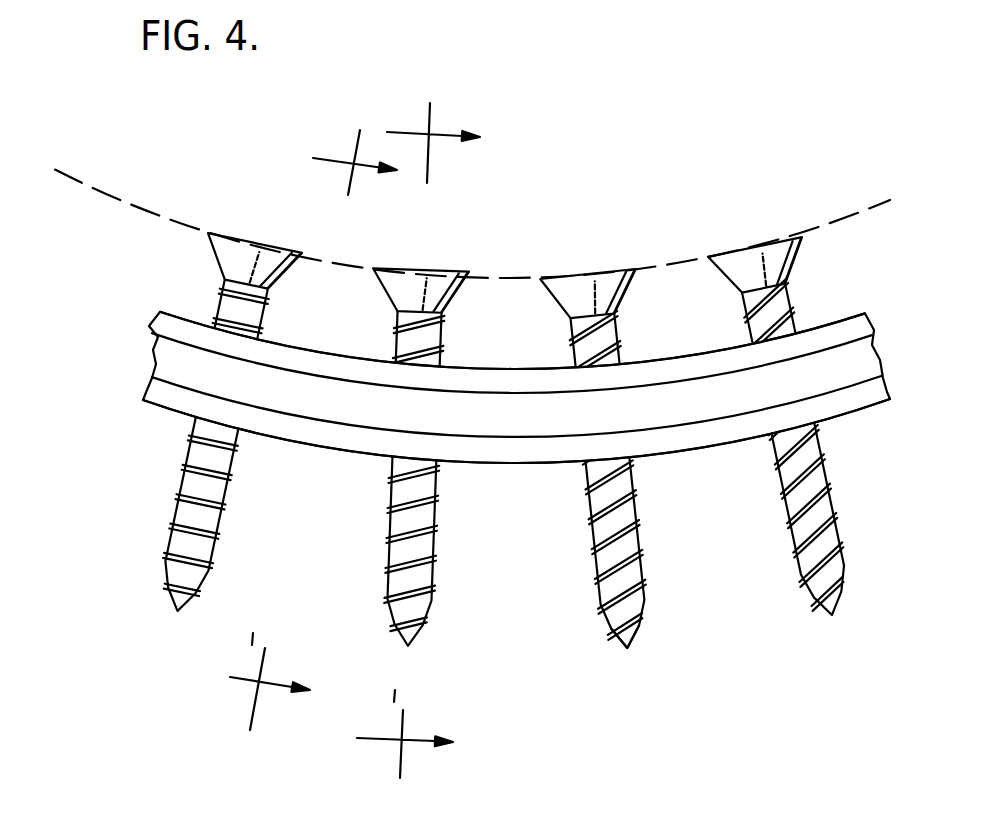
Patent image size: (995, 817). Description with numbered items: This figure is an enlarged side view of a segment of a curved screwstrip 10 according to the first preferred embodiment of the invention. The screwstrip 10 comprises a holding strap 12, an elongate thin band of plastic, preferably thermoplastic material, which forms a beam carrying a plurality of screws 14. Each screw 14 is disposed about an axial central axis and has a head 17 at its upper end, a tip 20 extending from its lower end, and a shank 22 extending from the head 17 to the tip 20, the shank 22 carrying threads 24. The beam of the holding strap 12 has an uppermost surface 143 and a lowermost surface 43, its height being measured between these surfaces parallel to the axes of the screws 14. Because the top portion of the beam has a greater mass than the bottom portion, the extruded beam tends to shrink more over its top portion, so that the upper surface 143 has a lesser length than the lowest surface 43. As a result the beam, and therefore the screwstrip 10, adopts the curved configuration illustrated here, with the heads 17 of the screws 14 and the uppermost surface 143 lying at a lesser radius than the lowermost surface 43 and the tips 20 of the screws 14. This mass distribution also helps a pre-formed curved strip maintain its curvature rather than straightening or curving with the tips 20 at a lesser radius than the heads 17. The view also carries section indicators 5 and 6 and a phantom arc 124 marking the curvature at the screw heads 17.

The screwstrip 10 is at (105, 323).
The holding strap 12 is at (516, 437).
The screw 14 is at (504, 449).
The head 17 is at (600, 267).
The tip 20 is at (627, 650).
The shank 22 is at (637, 502).
The threads 24 is at (642, 543).
The lowermost surface 43 is at (507, 467).
The curved mounting surface (phantom line) 124 is at (857, 213).
The uppermost surface 143 is at (530, 367).
The section line 5- 5 is at (313, 420).
The section line 6- 6 is at (418, 434).